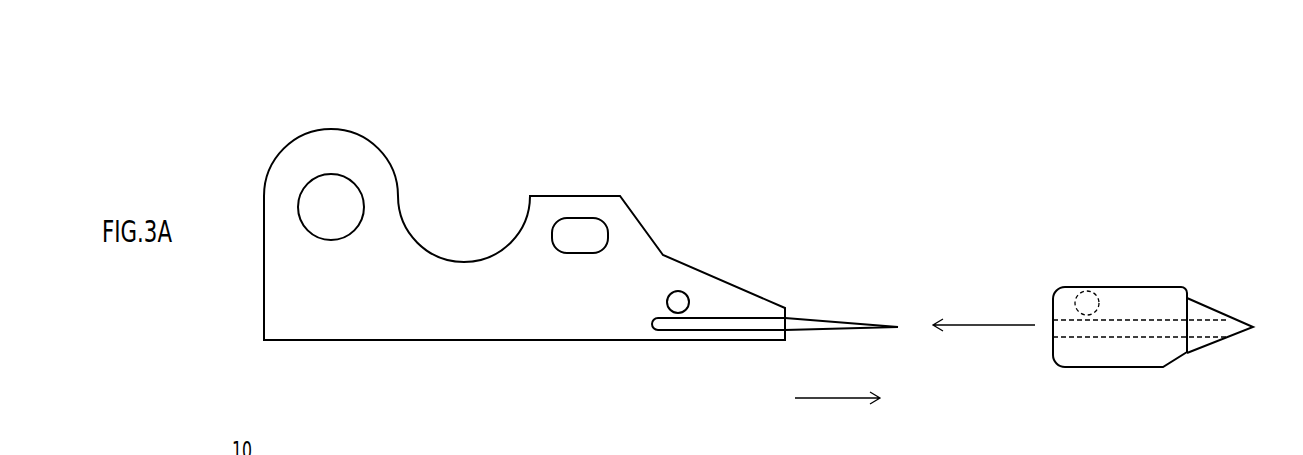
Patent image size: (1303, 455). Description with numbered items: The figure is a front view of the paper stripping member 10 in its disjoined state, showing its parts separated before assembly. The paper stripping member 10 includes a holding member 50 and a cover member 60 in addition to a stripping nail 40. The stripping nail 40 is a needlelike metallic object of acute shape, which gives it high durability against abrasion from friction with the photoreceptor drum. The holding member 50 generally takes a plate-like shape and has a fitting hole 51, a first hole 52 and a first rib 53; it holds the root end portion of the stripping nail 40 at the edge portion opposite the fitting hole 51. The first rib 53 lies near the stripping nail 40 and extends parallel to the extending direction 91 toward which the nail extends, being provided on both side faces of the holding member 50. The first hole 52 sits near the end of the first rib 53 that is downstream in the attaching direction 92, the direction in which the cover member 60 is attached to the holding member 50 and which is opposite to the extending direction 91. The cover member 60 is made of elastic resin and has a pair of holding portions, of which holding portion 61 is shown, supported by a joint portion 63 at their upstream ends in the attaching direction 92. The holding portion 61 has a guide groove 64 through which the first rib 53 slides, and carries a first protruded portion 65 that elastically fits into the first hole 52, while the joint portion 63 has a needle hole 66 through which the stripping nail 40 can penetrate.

The paper stripping member 10 is at (508, 222).
The stripping nail 40 is at (822, 320).
The holding member 50 is at (541, 196).
The fitting hole 51 is at (343, 180).
The first hole 52 is at (672, 290).
The first rib 53 is at (718, 325).
The cover member 60 is at (1153, 289).
The holding portion 61 is at (1140, 358).
The joint portion 63 is at (1202, 345).
The guide groove 64 is at (1085, 333).
The first protruded portion 65 is at (1083, 294).
The needle hole 66 is at (1203, 325).
The extending direction 91 is at (837, 386).
The attaching direction 92 is at (984, 312).